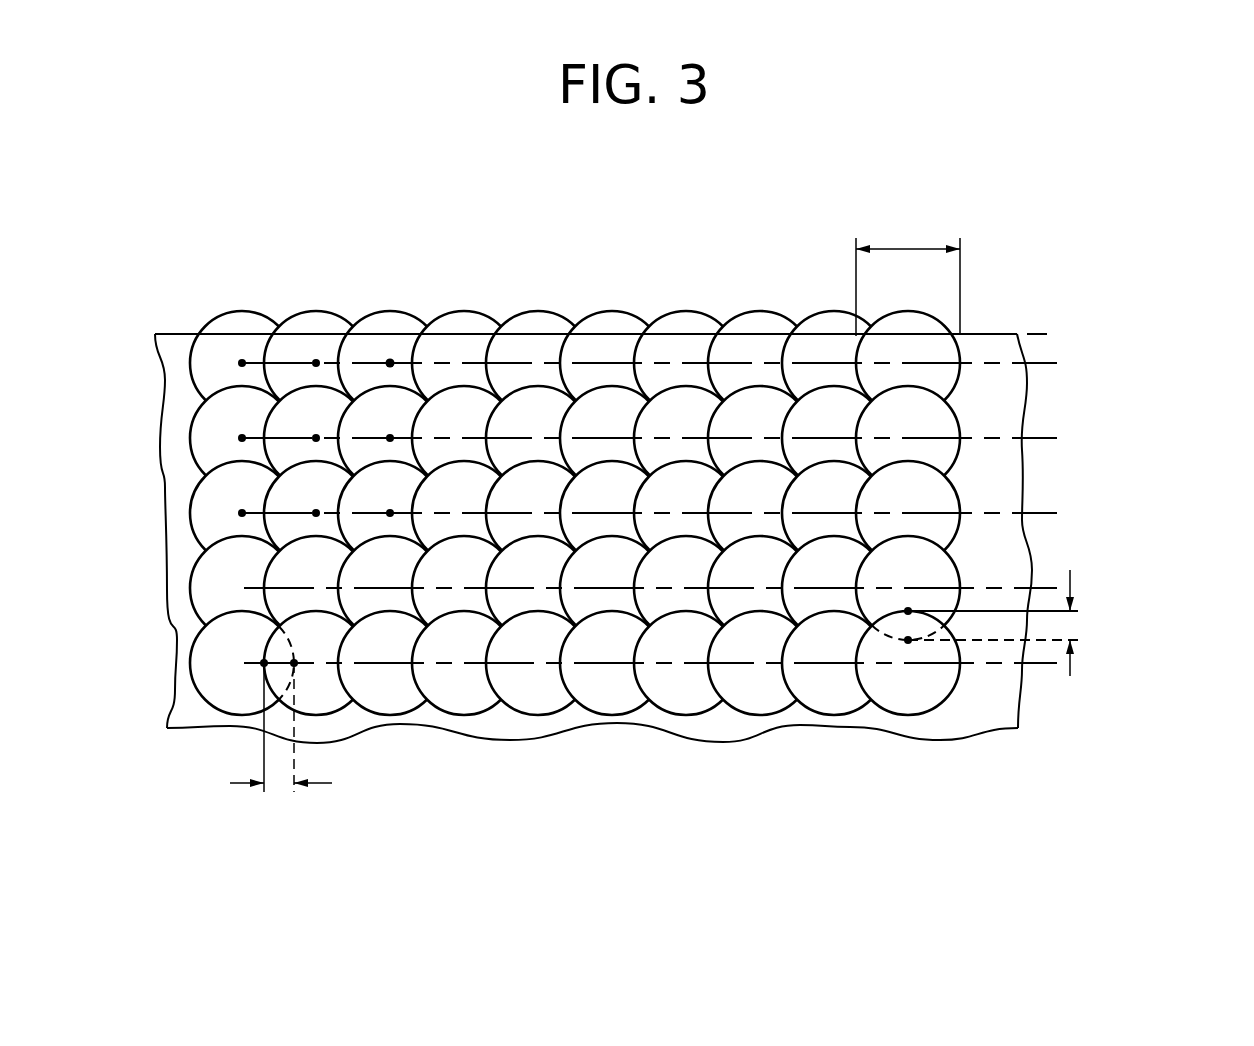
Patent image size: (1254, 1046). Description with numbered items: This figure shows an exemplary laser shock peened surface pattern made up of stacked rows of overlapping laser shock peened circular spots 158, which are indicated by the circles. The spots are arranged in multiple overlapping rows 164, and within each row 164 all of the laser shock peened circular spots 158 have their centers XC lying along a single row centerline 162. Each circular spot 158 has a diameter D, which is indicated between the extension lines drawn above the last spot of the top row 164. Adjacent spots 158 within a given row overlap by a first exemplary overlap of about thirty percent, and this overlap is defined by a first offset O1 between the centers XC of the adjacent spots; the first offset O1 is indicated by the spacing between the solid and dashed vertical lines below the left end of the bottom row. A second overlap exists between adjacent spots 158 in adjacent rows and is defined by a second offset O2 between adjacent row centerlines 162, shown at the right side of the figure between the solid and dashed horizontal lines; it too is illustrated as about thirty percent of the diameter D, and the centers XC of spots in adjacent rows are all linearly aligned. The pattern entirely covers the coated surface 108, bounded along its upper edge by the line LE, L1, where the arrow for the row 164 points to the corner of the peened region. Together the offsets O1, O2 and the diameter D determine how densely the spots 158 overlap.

The lens array substrate 108 is at (975, 730).
The laser shock peened circular spots 158 is at (240, 311).
The row centerline 162 is at (1062, 722).
The row of overlapping laser shock peened circular spots 164 is at (185, 361).
The centers of the laser shock peened circular spots XC is at (389, 360).
The diameter D is at (905, 247).
The leading edge LE is at (992, 333).
The reference line L1 is at (1037, 333).
The first offset O1 is at (332, 783).
The second offset O2 is at (1070, 572).